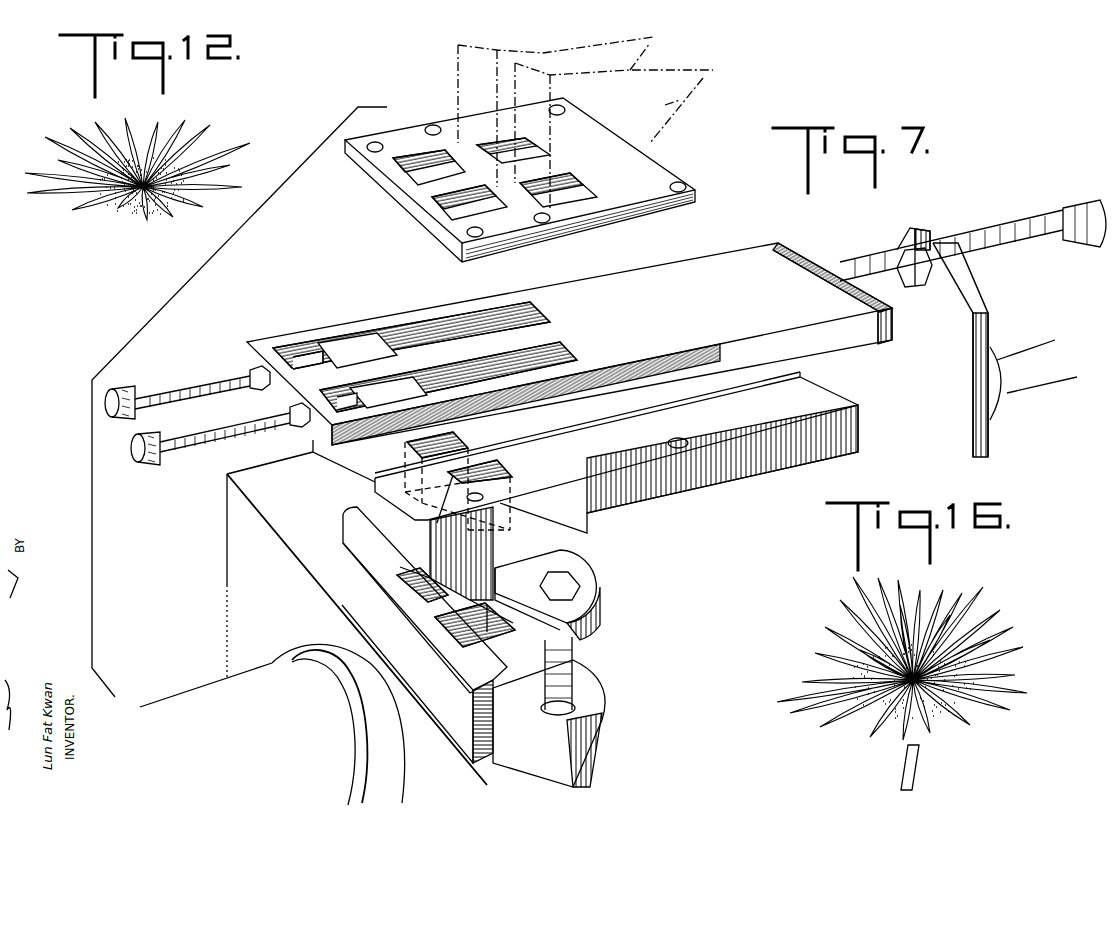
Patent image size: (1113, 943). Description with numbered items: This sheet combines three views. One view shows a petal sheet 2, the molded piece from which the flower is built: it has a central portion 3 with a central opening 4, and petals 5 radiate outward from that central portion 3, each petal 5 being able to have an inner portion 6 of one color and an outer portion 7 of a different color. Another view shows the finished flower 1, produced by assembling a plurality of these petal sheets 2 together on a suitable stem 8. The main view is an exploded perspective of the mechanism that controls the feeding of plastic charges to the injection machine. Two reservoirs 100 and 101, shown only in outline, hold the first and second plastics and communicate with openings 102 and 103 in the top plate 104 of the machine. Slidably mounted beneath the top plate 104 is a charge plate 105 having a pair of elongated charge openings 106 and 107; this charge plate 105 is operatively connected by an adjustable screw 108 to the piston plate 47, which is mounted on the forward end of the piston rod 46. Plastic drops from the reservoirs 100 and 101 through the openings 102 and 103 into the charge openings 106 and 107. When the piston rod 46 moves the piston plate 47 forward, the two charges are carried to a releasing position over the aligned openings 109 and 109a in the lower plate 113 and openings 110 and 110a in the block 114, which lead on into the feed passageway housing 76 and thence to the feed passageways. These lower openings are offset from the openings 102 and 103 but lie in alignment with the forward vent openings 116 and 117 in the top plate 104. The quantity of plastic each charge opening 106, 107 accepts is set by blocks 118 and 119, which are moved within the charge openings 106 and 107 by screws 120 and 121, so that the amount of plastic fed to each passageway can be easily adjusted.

In FIG. 16, the flower 1 is at (1035, 611).
In FIG. 15, the petal sheet 2 is at (234, 135).
In FIG. 16, the petal sheet 2 is at (1027, 678).
In FIG. 15, the central portion 3 is at (137, 207).
In FIG. 15, the central opening 4 is at (143, 210).
In FIG. 15, the petals 5 is at (210, 180).
In FIG. 15, the inner portion 6 is at (170, 160).
In FIG. 15, the outer portion 7 is at (195, 155).
In FIG. 16, the stem 8 is at (910, 772).
In FIG. 7, the piston rod 46 is at (1037, 383).
In FIG. 7, the piston plate 47 is at (970, 293).
In FIG. 7, the feed passageway housing 76 is at (170, 703).
In FIG. 7, the reservoir 100 is at (693, 110).
In FIG. 7, the reservoir 101 is at (458, 72).
In FIG. 7, the opening 102 is at (575, 195).
In FIG. 7, the opening 103 is at (533, 153).
In FIG. 7, the top plate 104 is at (658, 182).
In FIG. 7, the charge plate 105 is at (767, 257).
In FIG. 7, the charge opening 106 is at (553, 347).
In FIG. 7, the charge opening 107 is at (527, 323).
In FIG. 7, the adjustable screw 108 is at (1023, 215).
In FIG. 7, the opening 109 is at (505, 472).
In FIG. 7, the opening 109a is at (470, 450).
In FIG. 7, the opening 110 is at (480, 623).
In FIG. 7, the opening 110a is at (413, 592).
In FIG. 7, the lower plate 113 is at (667, 498).
In FIG. 7, the block 114 is at (590, 710).
In FIG. 7, the forward vent opening 116 is at (483, 208).
In FIG. 7, the forward vent opening 117 is at (418, 170).
In FIG. 7, the block 118 is at (397, 370).
In FIG. 7, the block 119 is at (347, 335).
In FIG. 7, the screw 120 is at (190, 450).
In FIG. 7, the screw 121 is at (183, 380).